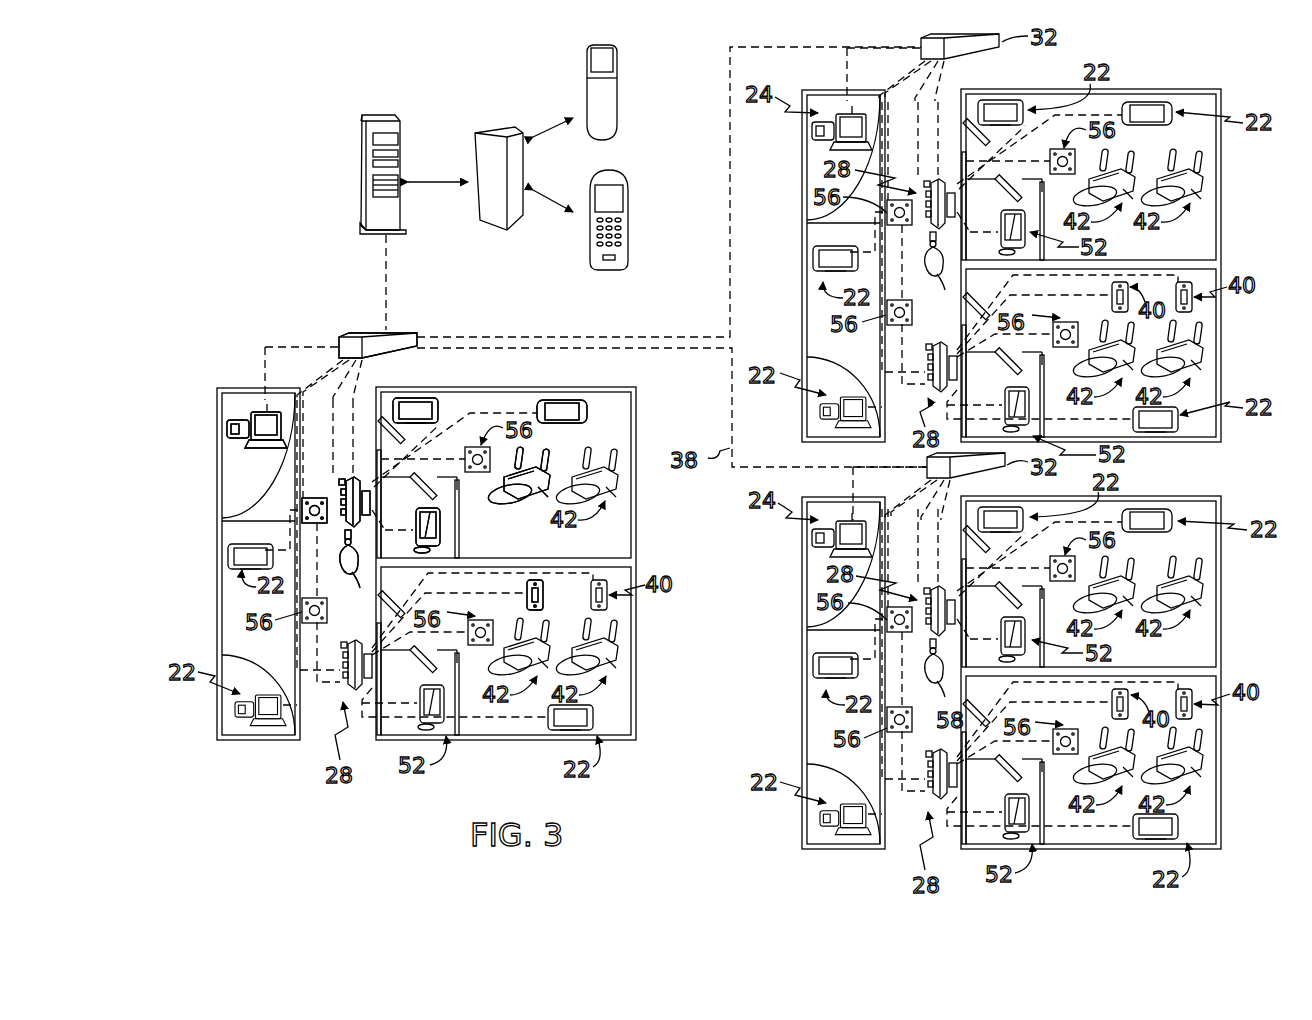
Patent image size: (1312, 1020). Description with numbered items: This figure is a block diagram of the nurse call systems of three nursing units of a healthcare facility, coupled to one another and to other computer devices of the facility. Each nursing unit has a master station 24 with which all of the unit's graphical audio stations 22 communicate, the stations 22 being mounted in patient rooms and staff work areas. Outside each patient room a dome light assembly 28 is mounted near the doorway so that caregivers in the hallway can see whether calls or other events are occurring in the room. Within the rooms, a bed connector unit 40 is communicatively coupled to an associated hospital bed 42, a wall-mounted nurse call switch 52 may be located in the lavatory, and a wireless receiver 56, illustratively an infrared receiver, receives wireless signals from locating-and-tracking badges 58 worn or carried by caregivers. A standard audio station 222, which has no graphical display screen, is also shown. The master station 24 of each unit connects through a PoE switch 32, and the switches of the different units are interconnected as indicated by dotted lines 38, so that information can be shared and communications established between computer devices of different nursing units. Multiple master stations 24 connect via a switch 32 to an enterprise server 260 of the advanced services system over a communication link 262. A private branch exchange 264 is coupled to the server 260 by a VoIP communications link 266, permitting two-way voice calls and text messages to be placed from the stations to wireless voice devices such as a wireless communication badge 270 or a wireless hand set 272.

The graphical audio station 22 is at (441, 408).
The master station 24 is at (243, 406).
The dome light assembly 28 is at (332, 493).
The PoE switch 32 is at (352, 332).
The dotted lines 38 is at (730, 273).
The bed connector unit 40 is at (545, 585).
The hospital bed 42 is at (537, 501).
The wall-mounted nurse call switch 52 is at (446, 530).
The wireless receiver 56 is at (302, 510).
The locating-and-tracking badge 58 is at (357, 576).
The standard audio station 222 is at (590, 411).
The enterprise server 260 is at (363, 173).
The communication link 262 is at (388, 267).
The private branch exchange 264 is at (498, 130).
The VoIP communications link 266 is at (440, 183).
The wireless communication badge 270 is at (610, 98).
The wireless hand set 272 is at (620, 198).